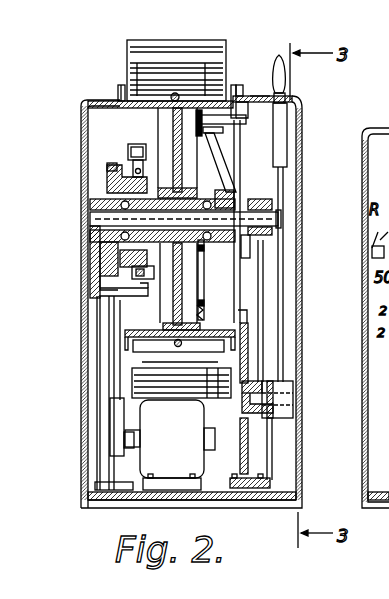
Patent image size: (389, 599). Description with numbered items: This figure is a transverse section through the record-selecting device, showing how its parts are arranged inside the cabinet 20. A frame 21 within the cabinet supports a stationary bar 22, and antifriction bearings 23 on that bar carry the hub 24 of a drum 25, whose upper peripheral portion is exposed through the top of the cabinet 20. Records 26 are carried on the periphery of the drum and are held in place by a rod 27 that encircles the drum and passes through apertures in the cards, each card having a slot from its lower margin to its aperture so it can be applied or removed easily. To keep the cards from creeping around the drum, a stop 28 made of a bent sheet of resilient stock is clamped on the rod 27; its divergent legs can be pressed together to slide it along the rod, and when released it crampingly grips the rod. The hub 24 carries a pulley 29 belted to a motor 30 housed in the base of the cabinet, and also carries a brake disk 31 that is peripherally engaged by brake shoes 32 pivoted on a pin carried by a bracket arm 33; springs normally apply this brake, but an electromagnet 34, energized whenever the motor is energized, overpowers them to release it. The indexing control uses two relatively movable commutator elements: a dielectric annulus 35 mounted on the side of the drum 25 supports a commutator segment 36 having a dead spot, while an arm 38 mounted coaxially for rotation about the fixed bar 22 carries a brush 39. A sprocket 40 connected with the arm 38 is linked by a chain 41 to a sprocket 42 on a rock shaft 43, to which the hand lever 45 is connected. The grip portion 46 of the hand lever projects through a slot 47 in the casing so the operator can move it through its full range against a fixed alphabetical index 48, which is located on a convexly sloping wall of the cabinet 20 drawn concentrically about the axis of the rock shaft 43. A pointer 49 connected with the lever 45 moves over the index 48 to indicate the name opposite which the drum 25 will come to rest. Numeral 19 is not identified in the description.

The tube 19 is at (232, 120).
The cabinet 20 is at (88, 402).
The frame 21 is at (100, 420).
The stationary bar 22 is at (93, 238).
The antifriction bearings 23 is at (90, 207).
The hub 24 is at (147, 142).
The drum 25 is at (117, 90).
The records 26 is at (207, 50).
The rod 27 is at (175, 95).
The stop 28 is at (135, 348).
The pulley 29 is at (107, 178).
The motor 30 is at (165, 462).
The brake disk 31 is at (118, 258).
The brake shoes 32 is at (132, 276).
The bracket arm 33 is at (140, 292).
The electromagnet 34 is at (128, 150).
The dielectric annulus 35 is at (200, 271).
The commutator segment 36 is at (200, 318).
The arm 38 is at (218, 175).
The brush 39 is at (220, 133).
The sprocket 40 is at (252, 243).
The chain 41 is at (262, 295).
The sprocket 42 is at (248, 370).
The rock shaft 43 is at (292, 392).
The hand lever 45 is at (290, 206).
The grip portion 46 is at (285, 70).
The slot 47 is at (290, 100).
The alphabetical index 48 is at (240, 95).
The pointer 49 is at (258, 95).